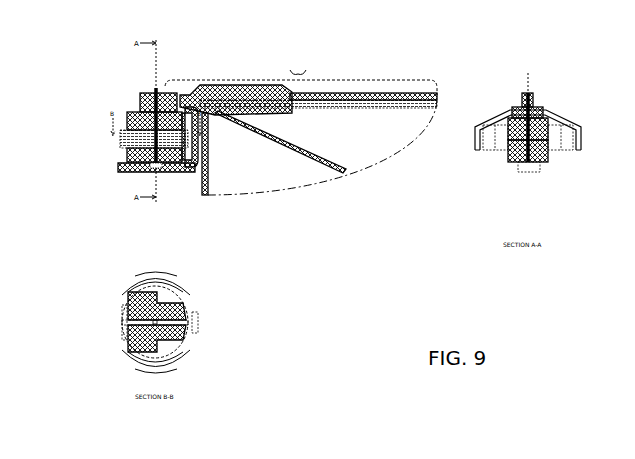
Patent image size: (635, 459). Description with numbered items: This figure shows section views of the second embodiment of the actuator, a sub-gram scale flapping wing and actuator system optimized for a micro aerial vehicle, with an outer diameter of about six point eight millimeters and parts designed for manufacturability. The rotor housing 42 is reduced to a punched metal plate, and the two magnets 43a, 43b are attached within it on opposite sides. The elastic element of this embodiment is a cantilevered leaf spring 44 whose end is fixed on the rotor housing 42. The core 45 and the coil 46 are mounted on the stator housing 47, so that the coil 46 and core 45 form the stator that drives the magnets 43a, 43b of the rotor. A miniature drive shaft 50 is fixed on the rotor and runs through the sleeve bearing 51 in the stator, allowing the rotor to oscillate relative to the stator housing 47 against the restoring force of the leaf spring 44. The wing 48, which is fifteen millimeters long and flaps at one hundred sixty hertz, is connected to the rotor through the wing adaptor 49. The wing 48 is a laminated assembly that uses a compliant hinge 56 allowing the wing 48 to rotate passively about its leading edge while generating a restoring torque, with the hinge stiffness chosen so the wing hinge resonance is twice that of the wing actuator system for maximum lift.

The rotor housing 42 is at (134, 110).
The magnet 43a is at (118, 127).
The magnet 43b is at (570, 147).
The cantilevered leaf spring 44 is at (150, 173).
The core 45 is at (120, 142).
The coil 46 is at (136, 123).
The stator housing 47 is at (120, 160).
The wing 48 is at (318, 80).
The wing adaptor 49 is at (155, 92).
The miniature drive shaft 50 is at (167, 87).
The sleeve bearing 51 is at (165, 167).
The compliant hinge 56 is at (248, 100).